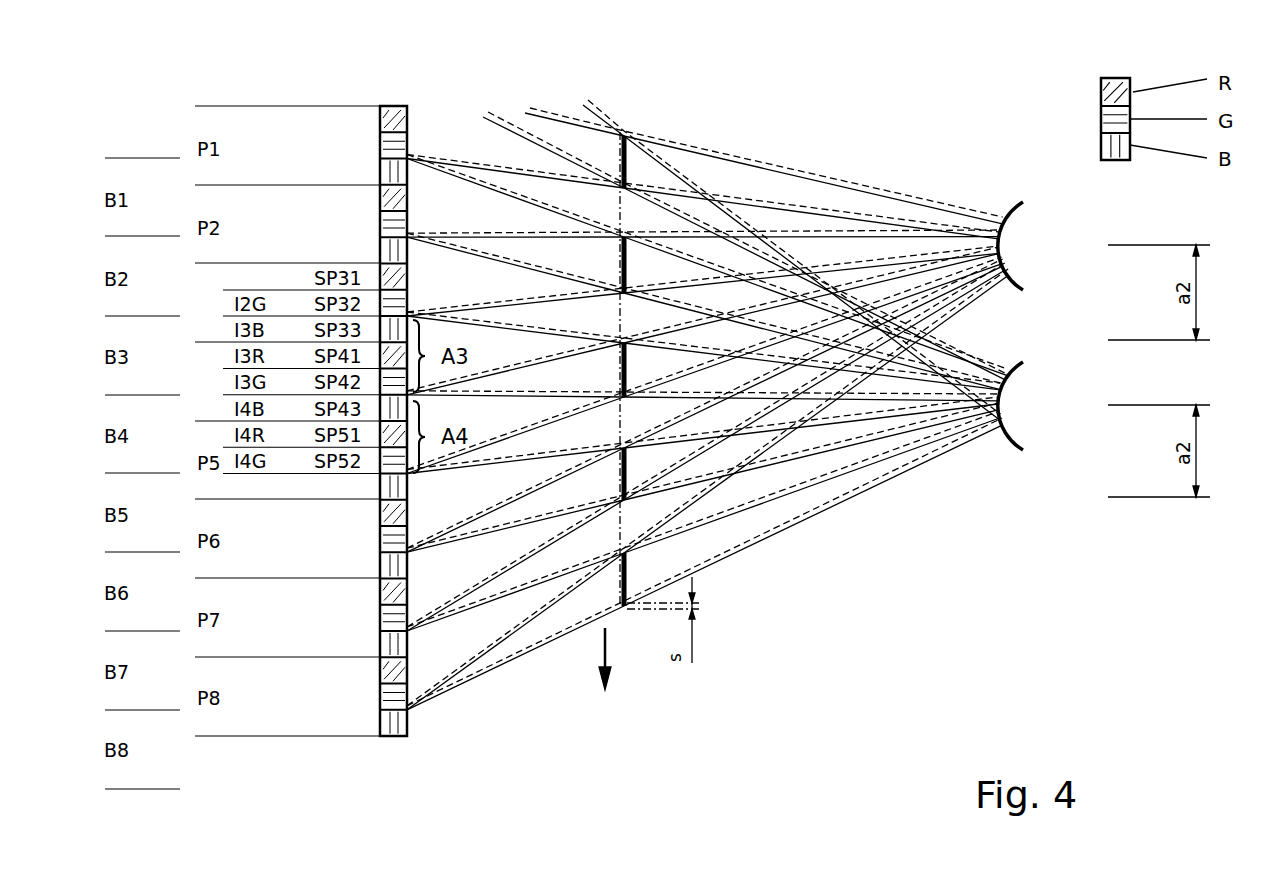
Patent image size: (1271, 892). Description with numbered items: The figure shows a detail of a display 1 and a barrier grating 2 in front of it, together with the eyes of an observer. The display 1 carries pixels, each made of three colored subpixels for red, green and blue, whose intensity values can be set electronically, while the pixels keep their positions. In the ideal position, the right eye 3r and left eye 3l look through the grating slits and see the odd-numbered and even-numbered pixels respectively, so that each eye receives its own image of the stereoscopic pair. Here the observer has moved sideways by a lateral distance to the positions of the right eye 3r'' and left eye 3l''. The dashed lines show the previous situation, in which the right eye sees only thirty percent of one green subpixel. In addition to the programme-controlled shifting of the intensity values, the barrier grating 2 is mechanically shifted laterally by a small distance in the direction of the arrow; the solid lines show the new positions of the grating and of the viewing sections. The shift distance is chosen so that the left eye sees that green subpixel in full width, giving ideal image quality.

The display 1 is at (393, 737).
The barrier grating 2 is at (627, 608).
The right eye 3r'' is at (1052, 246).
The left eye 3l'' is at (1051, 406).
The right eye 3r is at (1073, 340).
The left eye 3l is at (1071, 497).